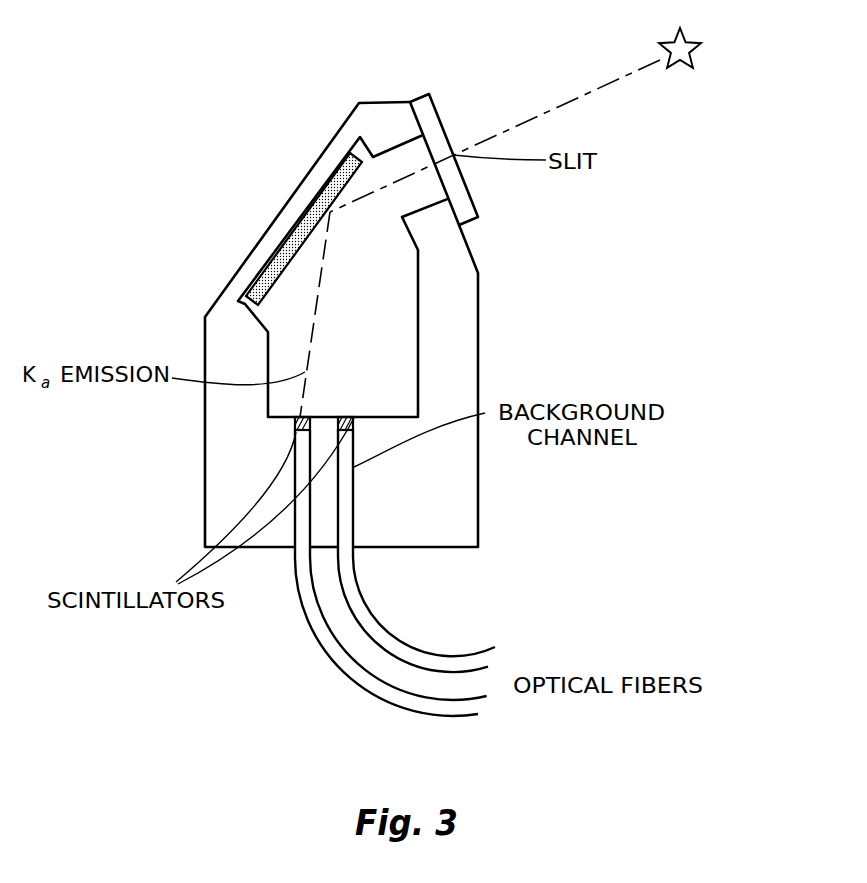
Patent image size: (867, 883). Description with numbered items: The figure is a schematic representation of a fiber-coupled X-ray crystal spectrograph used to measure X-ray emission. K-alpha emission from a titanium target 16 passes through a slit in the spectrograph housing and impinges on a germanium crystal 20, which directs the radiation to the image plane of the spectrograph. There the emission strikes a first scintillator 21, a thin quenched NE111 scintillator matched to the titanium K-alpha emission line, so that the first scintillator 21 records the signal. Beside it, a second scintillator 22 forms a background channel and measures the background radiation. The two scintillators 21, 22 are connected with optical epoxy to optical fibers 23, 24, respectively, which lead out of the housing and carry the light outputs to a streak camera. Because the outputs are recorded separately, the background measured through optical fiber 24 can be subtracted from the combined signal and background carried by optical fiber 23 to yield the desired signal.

The titanium target 16 is at (694, 60).
The germanium crystal 20 is at (300, 227).
The first scintillator 21 is at (294, 430).
The second scintillator 22 is at (353, 417).
The optical fiber 23 is at (334, 661).
The optical fiber 24 is at (376, 615).